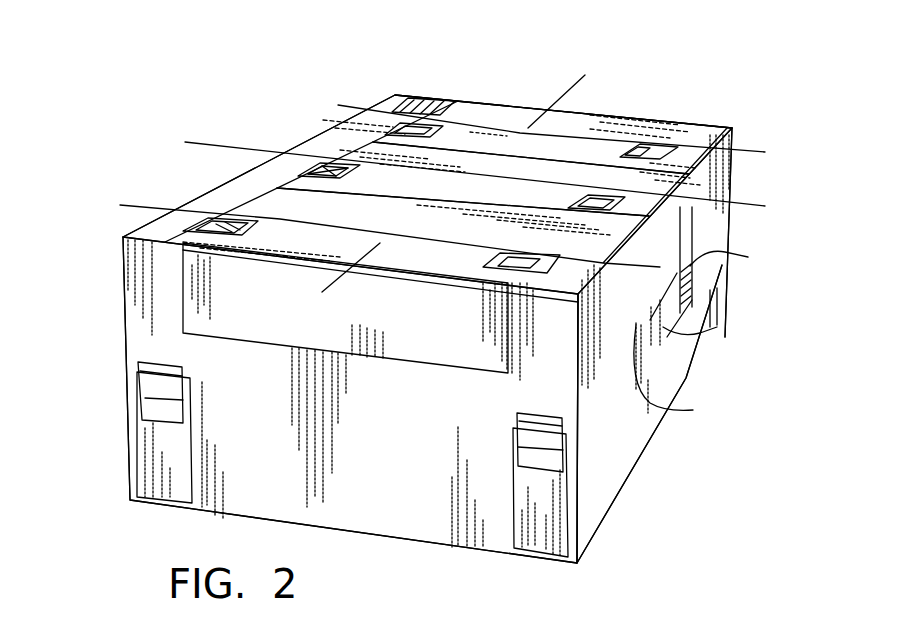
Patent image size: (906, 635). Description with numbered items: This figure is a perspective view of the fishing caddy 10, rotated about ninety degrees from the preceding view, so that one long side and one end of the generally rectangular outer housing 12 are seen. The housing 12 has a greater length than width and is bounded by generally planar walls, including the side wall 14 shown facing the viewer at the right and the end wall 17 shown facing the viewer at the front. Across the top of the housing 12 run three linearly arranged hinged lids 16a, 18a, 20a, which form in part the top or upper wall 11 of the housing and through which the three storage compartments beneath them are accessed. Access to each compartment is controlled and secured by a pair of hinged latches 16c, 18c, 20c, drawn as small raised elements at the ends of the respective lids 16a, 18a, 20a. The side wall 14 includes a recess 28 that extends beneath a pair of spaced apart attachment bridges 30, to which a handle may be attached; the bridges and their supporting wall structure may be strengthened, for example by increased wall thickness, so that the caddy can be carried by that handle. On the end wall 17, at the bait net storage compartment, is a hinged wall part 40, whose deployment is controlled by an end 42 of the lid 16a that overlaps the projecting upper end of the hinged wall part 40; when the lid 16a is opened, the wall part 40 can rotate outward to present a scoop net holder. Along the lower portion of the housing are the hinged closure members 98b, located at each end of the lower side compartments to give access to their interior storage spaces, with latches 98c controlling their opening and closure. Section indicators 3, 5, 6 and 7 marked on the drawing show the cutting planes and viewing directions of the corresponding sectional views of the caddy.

The fishing caddy 10 is at (240, 48).
The top or upper wall 11 is at (428, 100).
The outer housing 12 is at (210, 192).
The side wall 14 is at (727, 294).
The hinged lid 16a is at (416, 224).
The hinged latches 16c is at (278, 233).
The end wall 17 is at (350, 400).
The hinged lid 18a is at (520, 165).
The hinged latches 18c is at (362, 181).
The hinged lid 20a is at (527, 116).
The hinged latches 20c is at (372, 142).
The recess 28 is at (712, 337).
The attachment bridges 30 is at (693, 410).
The hinged wall part 40 is at (212, 303).
The end of lid 42 is at (410, 273).
The hinged closure members 98b is at (138, 467).
The latches 98c is at (150, 383).
The section line 3- 3 is at (585, 75).
The section line 5- 5 is at (120, 205).
The section line 6- 6 is at (185, 142).
The section line 7- 7 is at (338, 105).